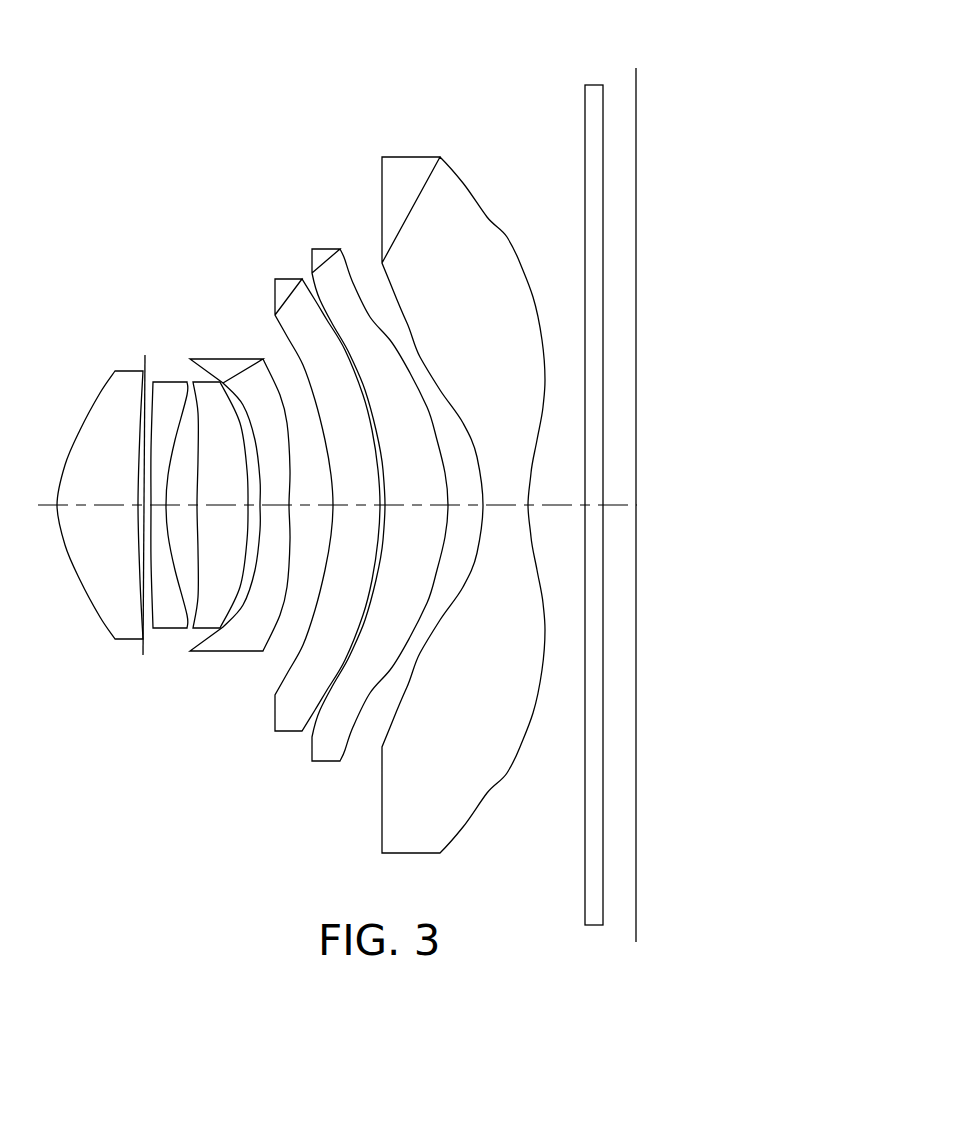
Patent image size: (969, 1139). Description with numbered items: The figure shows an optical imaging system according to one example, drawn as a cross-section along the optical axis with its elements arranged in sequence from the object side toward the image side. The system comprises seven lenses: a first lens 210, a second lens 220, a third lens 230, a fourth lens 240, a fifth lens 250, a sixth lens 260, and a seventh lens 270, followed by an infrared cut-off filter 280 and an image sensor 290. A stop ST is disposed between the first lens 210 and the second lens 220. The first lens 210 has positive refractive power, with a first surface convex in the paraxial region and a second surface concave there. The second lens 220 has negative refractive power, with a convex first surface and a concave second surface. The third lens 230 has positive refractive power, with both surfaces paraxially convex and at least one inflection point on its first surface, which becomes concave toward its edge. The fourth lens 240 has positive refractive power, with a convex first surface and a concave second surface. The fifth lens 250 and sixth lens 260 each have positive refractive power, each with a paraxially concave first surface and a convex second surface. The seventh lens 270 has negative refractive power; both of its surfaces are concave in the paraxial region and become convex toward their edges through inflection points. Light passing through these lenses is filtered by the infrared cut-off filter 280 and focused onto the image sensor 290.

The first lens 210 is at (97, 393).
The stop ST is at (143, 362).
The second lens 220 is at (166, 378).
The third lens 230 is at (195, 382).
The fourth lens 240 is at (224, 358).
The fifth lens 250 is at (280, 278).
The sixth lens 260 is at (325, 249).
The seventh lens 270 is at (422, 157).
The infrared cut-off filter 280 is at (590, 85).
The image sensor 290 is at (637, 85).